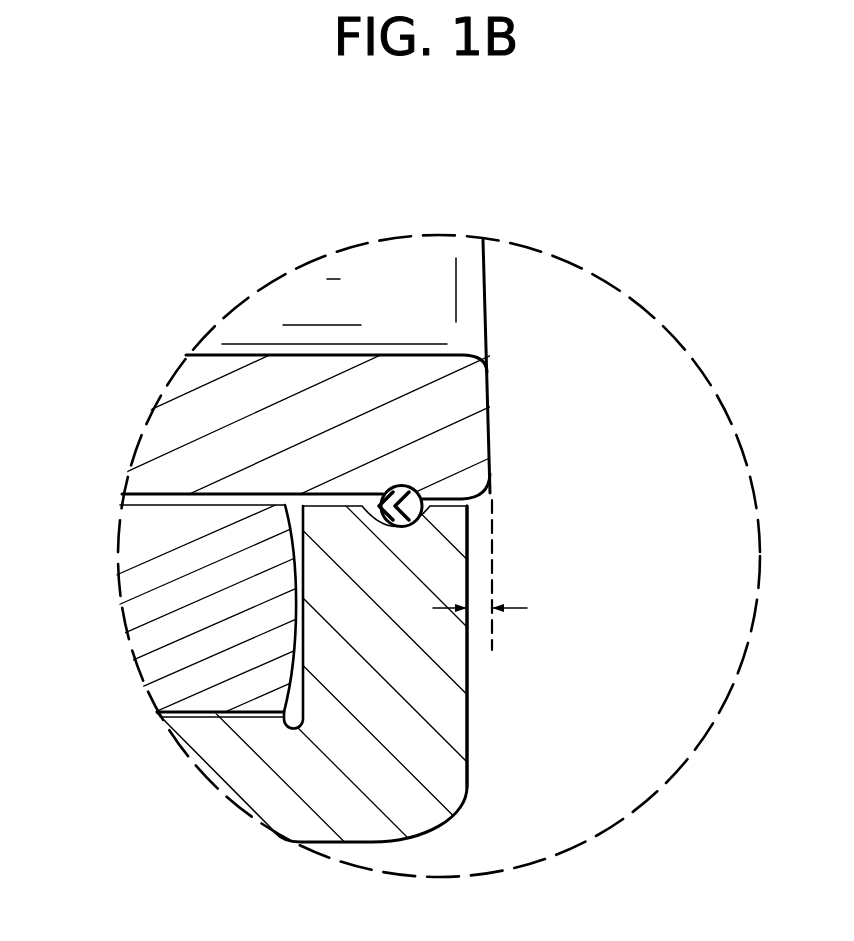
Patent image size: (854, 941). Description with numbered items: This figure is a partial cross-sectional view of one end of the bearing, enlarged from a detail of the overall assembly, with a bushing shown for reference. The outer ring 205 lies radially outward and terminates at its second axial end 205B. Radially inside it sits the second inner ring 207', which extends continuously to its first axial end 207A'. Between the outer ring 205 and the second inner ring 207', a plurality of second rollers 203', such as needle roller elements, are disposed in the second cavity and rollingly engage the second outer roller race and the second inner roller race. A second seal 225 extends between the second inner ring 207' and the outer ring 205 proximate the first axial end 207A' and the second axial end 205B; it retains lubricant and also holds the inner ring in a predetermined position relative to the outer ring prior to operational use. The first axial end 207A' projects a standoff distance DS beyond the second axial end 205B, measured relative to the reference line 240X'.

The second inner ring 207' is at (384, 429).
The first axial end of the second inner ring 207A' is at (414, 347).
The second rollers 203' is at (195, 641).
The outer ring 205 is at (308, 813).
The second axial end of the outer ring 205B is at (468, 758).
The second seal 225 is at (383, 526).
The reference plane 240X' is at (569, 575).
The standoff distance DS is at (512, 610).